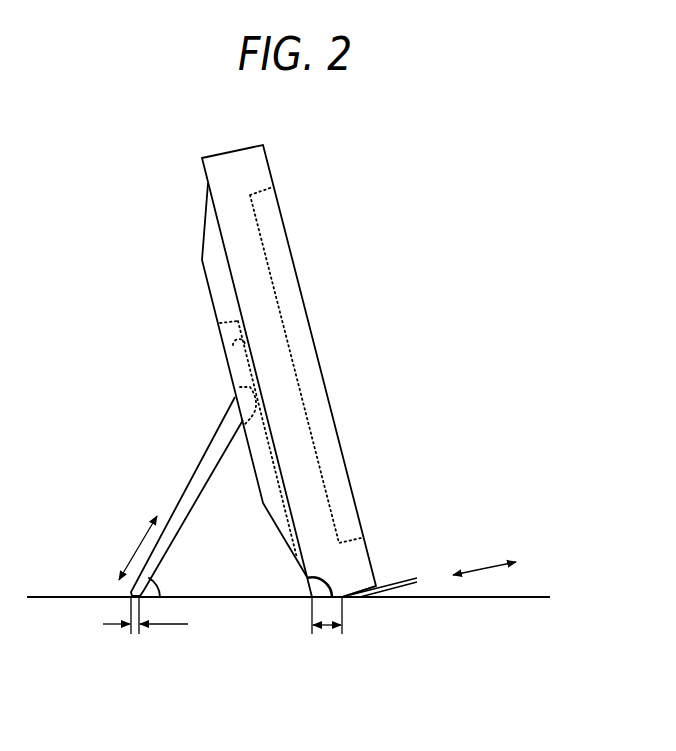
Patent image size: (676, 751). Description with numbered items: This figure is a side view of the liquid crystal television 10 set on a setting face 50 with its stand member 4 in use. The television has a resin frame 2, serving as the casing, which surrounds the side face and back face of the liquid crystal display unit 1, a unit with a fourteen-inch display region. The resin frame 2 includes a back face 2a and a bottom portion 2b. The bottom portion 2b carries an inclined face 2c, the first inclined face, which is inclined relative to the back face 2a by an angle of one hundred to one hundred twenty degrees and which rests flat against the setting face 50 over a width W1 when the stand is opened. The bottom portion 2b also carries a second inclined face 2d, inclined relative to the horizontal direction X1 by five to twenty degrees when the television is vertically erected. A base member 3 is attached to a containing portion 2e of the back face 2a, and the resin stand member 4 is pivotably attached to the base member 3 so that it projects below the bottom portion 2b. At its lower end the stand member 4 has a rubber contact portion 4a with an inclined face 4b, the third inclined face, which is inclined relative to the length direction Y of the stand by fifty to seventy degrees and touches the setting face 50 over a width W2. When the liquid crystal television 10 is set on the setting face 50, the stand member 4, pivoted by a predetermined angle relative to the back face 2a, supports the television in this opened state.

The liquid crystal television 10 is at (166, 201).
The liquid crystal display unit 1 is at (272, 186).
The resin frame 2 is at (287, 400).
The back face 2a is at (207, 288).
The bottom portion 2b is at (375, 654).
The inclined face 2c is at (342, 597).
The inclined face 2d is at (368, 590).
The containing portion 2e is at (245, 333).
The base member 3 is at (226, 360).
The stand member 4 is at (200, 465).
The contact portion 4a is at (133, 596).
The inclined face 4b is at (130, 602).
The setting face 50 is at (532, 597).
The width W1 is at (331, 628).
The width W2 is at (146, 629).
The horizontal direction X1 is at (484, 555).
The length direction Y is at (135, 548).